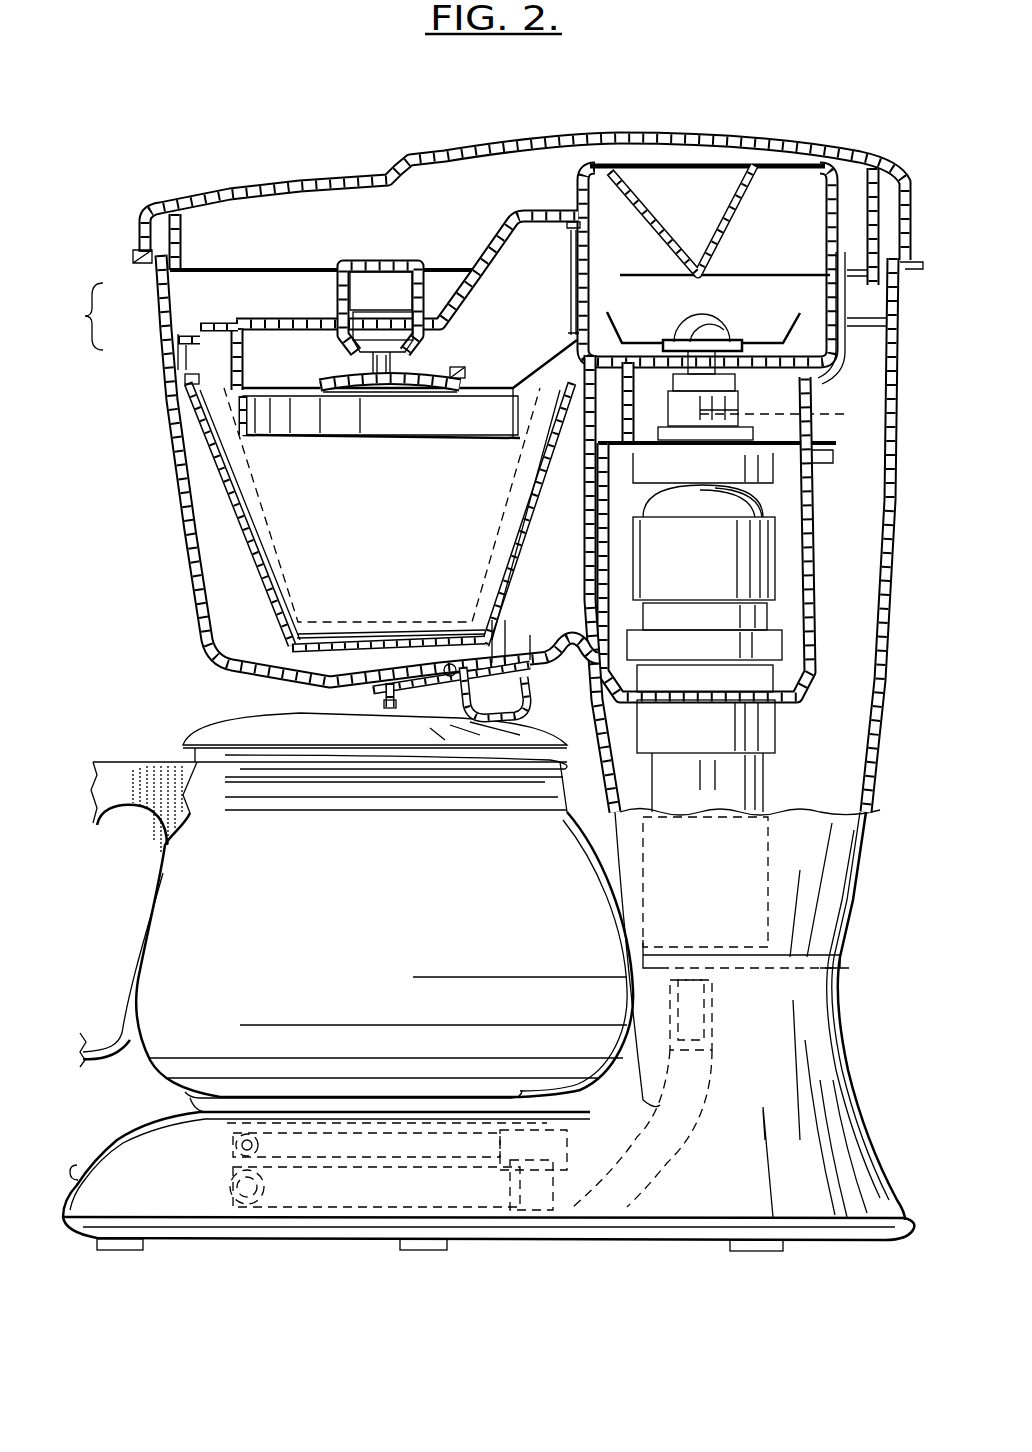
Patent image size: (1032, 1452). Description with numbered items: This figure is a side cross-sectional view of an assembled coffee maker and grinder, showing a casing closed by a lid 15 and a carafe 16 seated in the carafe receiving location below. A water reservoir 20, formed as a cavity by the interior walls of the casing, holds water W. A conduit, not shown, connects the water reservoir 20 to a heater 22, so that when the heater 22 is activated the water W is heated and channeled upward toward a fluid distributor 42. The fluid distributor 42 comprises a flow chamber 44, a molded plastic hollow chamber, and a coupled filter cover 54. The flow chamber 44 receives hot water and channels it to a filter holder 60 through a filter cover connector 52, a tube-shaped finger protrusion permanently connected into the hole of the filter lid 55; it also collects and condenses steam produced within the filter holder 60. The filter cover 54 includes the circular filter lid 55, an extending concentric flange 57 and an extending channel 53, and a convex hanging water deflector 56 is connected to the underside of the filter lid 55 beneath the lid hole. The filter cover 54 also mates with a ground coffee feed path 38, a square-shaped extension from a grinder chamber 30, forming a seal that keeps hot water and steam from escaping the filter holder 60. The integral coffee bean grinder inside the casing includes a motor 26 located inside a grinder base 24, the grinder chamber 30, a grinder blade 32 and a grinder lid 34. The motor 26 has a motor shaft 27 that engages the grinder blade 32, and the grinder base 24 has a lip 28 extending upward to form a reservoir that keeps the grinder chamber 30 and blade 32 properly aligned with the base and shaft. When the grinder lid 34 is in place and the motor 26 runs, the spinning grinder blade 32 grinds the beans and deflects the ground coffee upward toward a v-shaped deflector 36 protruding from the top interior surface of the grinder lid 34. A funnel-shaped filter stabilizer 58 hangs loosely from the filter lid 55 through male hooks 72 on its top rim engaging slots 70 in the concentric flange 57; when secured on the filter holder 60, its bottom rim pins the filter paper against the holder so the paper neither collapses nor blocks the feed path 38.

The lid 15 is at (700, 135).
The carafe 16 is at (300, 886).
The water reservoir 20 is at (840, 865).
The heater 22 is at (333, 1190).
The grinder base 24 is at (813, 643).
The motor 26 is at (698, 570).
The motor shaft 27 is at (792, 414).
The lip 28 is at (810, 430).
The grinder chamber 30 is at (840, 367).
The grinder blade 32 is at (783, 333).
The grinder lid 34 is at (830, 175).
The v-shaped deflector 36 is at (723, 213).
The ground coffee feed path 38 is at (585, 280).
The fluid distributor 42 is at (360, 262).
The flow chamber 44 is at (372, 288).
The filter cover connector 52 is at (375, 319).
The extending channel 53 is at (545, 278).
The filter cover 54 is at (147, 326).
The filter lid 55 is at (233, 323).
The hanging water deflector 56 is at (350, 392).
The concentric flange 57 is at (238, 342).
The filter stabilizer 58 is at (300, 425).
The filter holder 60 is at (233, 507).
The slots 70 is at (243, 382).
The hooks 72 is at (186, 378).
The water W is at (812, 790).